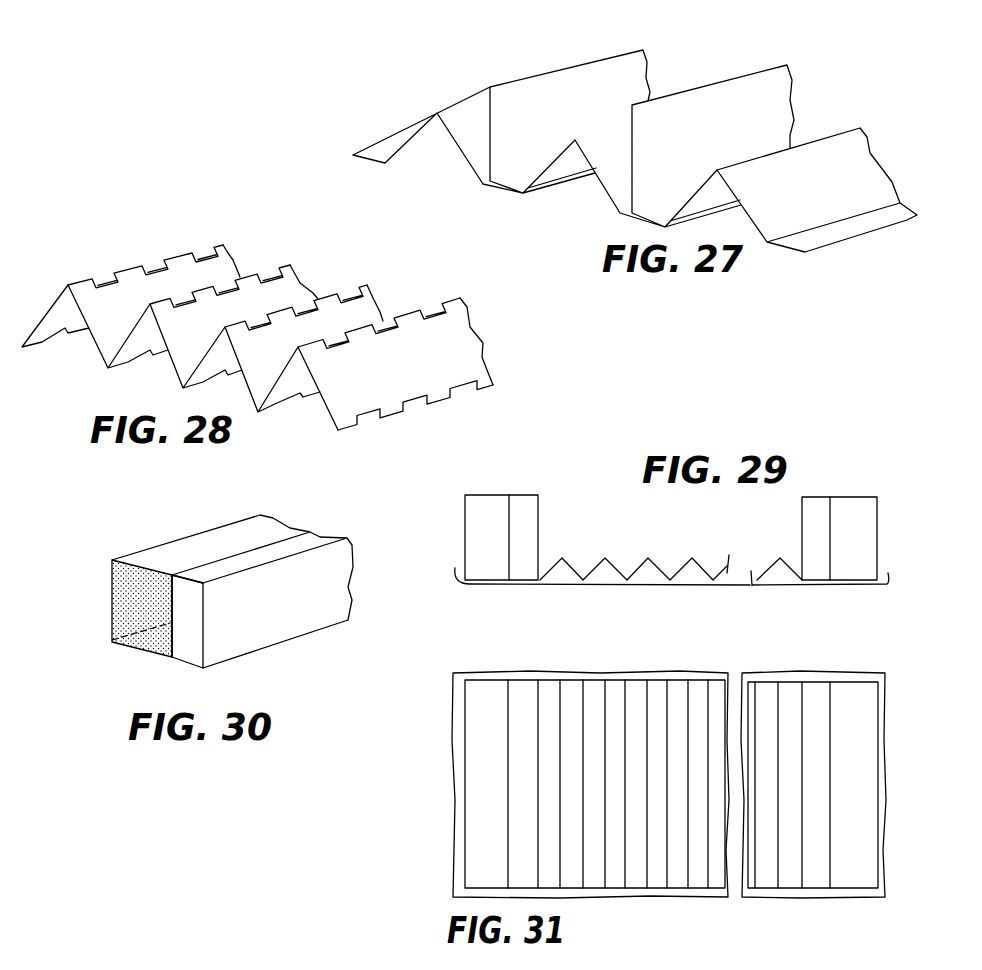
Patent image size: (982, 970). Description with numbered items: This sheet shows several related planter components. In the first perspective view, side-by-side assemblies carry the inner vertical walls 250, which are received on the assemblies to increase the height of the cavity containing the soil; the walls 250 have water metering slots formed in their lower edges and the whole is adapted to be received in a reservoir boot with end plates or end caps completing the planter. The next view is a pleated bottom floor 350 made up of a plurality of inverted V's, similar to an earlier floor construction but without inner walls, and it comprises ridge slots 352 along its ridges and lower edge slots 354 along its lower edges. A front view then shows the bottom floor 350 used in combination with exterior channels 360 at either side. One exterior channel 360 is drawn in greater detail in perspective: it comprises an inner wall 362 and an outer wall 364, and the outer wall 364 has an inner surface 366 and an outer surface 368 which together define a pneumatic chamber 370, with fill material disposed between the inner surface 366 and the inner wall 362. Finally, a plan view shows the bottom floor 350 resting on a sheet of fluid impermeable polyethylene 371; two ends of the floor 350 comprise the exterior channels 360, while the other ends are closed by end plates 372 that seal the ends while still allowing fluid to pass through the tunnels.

In FIG. 27, the inner vertical walls 250 is at (602, 72).
In FIG. 28, the pleated bottom floor 350 is at (257, 321).
In FIG. 29, the pleated bottom floor 350 is at (627, 582).
In FIG. 31, the pleated bottom floor 350 is at (640, 877).
In FIG. 28, the ridge slots 352 is at (263, 270).
In FIG. 28, the lower edge slots 354 is at (465, 390).
In FIG. 29, the exterior channel 360 is at (500, 487).
In FIG. 30, the exterior channel 360 is at (209, 608).
In FIG. 31, the exterior channel 360 is at (604, 790).
In FIG. 30, the inner wall 362 is at (112, 610).
In FIG. 30, the outer wall 364 is at (197, 630).
In FIG. 30, the inner surface 366 is at (170, 598).
In FIG. 30, the outer surface 368 is at (310, 550).
In FIG. 30, the pneumatic chamber 370 is at (193, 612).
In FIG. 29, the sheet of fluid impermeable polyethylene 371 is at (882, 587).
In FIG. 31, the sheet of fluid impermeable polyethylene 371 is at (823, 897).
In FIG. 31, the end plates 372 is at (690, 684).